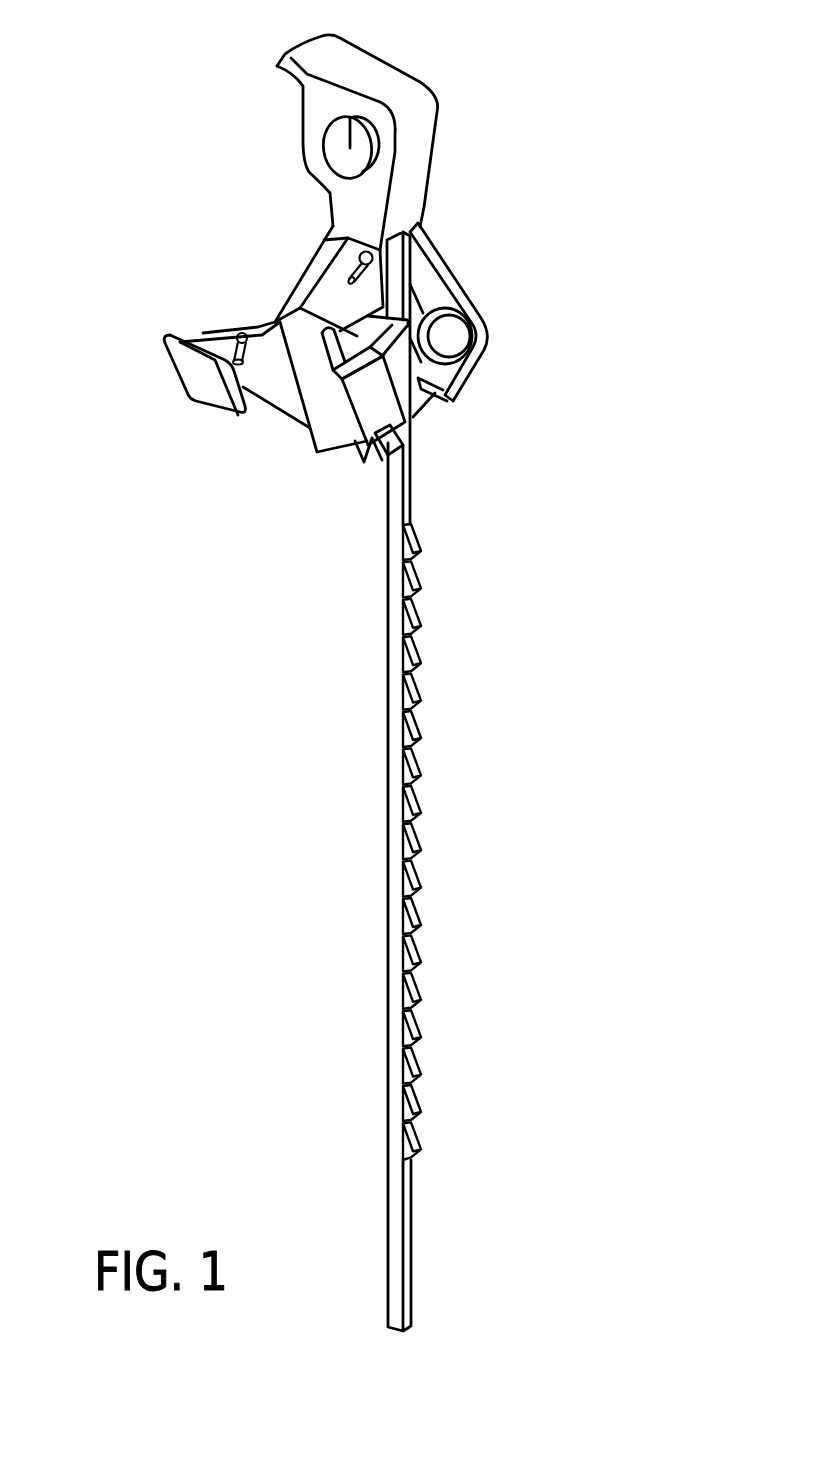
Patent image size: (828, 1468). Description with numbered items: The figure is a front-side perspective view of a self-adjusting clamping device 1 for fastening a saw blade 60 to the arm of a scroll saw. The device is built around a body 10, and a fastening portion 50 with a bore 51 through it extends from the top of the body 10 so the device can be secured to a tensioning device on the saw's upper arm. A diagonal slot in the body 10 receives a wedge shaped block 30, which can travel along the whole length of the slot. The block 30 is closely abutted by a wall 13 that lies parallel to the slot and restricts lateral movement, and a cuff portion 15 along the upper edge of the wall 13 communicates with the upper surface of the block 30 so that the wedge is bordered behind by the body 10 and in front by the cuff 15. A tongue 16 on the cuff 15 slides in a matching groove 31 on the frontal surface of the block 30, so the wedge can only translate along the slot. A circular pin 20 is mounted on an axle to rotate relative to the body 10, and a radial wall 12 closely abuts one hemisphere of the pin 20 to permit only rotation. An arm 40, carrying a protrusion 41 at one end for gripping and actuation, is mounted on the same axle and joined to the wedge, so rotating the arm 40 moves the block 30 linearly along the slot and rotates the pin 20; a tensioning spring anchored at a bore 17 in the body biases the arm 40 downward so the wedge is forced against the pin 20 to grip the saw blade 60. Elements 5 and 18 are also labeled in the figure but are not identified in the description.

The self-adjusting clamping device 1 is at (678, 137).
The body 10 is at (392, 42).
The fastening portion 50 is at (410, 113).
The bore 51 is at (350, 148).
The bore 17 is at (380, 246).
The wedge shaped block 30 is at (402, 388).
The radial wall 12 is at (483, 348).
The pin 20 is at (445, 342).
The tongue 16 is at (323, 331).
The wall 13 is at (337, 428).
The cuff portion 15 is at (380, 422).
The groove 31 is at (410, 440).
The blade slot 5 is at (398, 463).
The arm 40 is at (270, 348).
The pin 18 is at (205, 333).
The protrusion 41 is at (208, 392).
The saw blade 60 is at (418, 692).